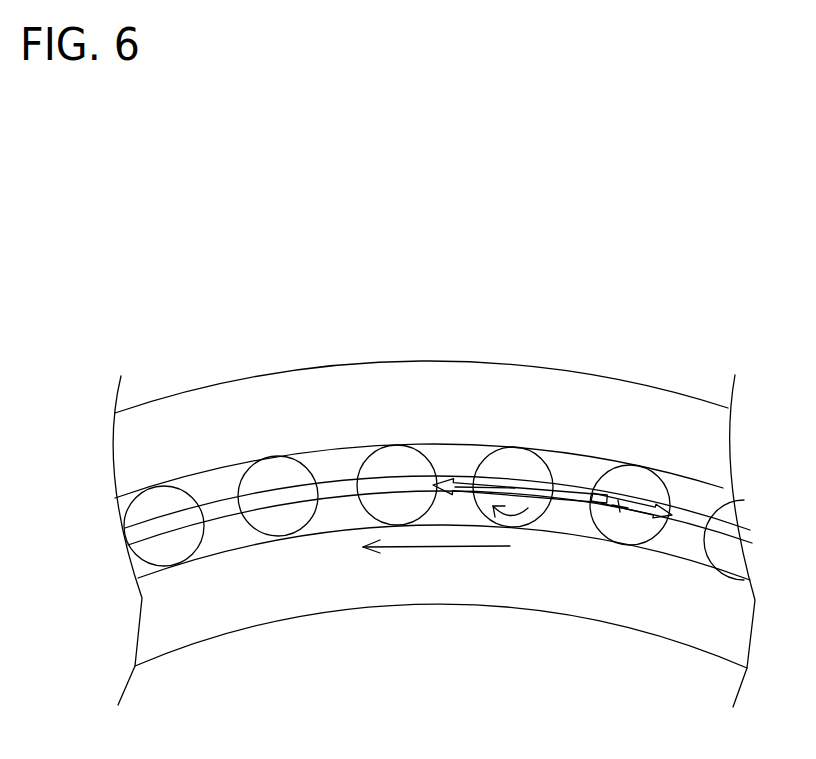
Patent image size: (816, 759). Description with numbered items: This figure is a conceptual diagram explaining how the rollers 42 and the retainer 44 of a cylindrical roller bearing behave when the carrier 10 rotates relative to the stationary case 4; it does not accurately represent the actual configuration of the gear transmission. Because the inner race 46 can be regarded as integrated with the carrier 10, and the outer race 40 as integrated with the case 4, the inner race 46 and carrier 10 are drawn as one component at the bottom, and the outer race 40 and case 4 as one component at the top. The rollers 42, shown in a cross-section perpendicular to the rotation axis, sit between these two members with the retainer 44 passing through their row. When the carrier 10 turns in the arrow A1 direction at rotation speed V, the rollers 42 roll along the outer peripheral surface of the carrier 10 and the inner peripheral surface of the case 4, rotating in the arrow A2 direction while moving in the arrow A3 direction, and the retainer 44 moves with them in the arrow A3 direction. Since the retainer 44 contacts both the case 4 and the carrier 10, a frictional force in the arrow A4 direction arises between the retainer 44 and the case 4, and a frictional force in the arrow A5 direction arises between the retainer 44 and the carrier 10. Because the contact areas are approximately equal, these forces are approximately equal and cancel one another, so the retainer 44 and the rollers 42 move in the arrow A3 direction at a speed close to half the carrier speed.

The case 4 is at (421, 413).
The outer race 40 is at (270, 393).
The carrier 10 is at (442, 611).
The inner race 46 is at (200, 628).
The rollers 42 is at (537, 465).
The retainer 44 is at (330, 488).
The arrow A1 direction A1 is at (420, 543).
The arrow A2 direction A2 is at (527, 512).
The arrow A3 direction A3 is at (503, 463).
The arrow A4 direction A4 is at (640, 500).
The arrow A5 direction A5 is at (620, 512).